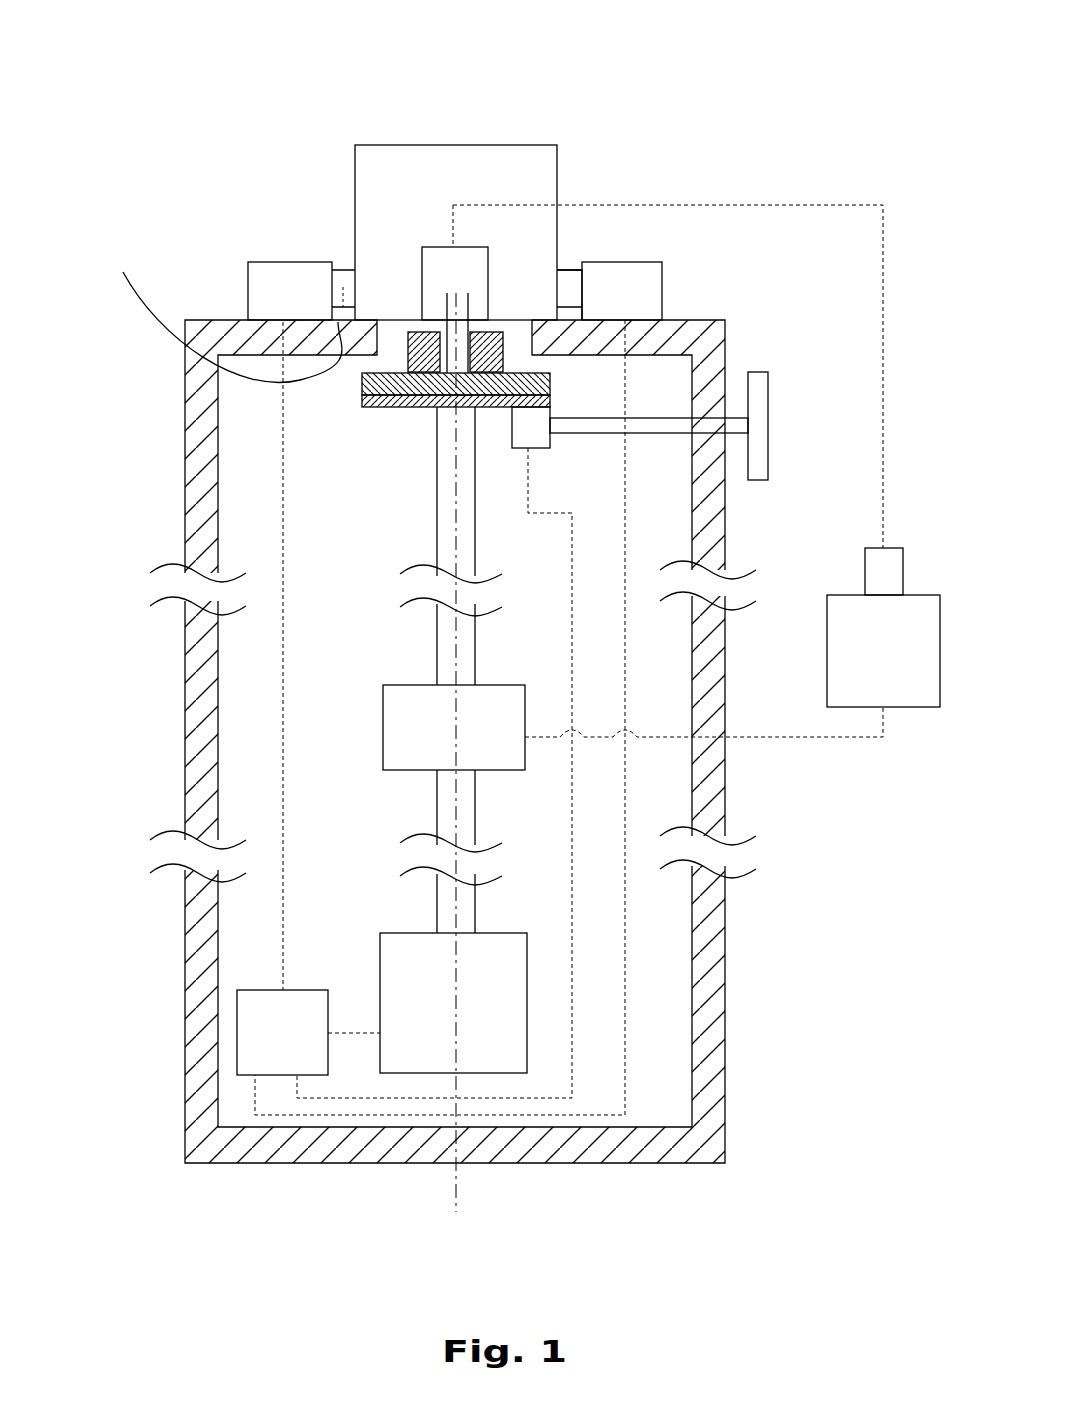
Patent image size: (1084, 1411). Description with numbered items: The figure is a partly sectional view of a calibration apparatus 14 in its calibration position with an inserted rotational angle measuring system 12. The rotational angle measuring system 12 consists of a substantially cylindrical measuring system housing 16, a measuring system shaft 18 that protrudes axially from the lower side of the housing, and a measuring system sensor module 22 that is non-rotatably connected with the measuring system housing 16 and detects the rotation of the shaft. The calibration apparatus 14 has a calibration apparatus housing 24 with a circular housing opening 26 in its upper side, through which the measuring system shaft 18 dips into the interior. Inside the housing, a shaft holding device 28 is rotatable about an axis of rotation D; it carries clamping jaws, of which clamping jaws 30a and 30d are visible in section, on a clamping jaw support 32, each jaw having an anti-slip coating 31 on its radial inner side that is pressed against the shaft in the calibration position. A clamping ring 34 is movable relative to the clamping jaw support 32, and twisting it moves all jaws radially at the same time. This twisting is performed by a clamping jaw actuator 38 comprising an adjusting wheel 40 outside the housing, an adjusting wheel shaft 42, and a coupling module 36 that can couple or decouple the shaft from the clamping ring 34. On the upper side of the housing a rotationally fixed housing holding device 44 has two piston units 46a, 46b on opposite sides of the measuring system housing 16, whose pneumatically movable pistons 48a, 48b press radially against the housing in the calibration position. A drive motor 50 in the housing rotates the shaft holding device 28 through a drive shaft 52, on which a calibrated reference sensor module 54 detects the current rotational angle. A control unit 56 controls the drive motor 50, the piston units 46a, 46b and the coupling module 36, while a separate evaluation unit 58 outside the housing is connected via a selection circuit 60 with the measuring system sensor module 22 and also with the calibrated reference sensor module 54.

The rotational angle measuring system 12 is at (412, 166).
The calibration apparatus 14 is at (400, 741).
The measuring system housing 16 is at (458, 145).
The measuring system shaft 18 is at (577, 380).
The measuring system sensor module 22 is at (437, 267).
The calibration apparatus housing 24 is at (205, 500).
The housing opening 26 is at (570, 287).
The shaft holding device 28 is at (349, 391).
The clamping jaw 30a is at (414, 337).
The clamping jaw 30d is at (512, 332).
The anti-slip coating 31 is at (474, 328).
The clamping jaw support 32 is at (550, 383).
The clamping ring 34 is at (550, 400).
The coupling module 36 is at (528, 428).
The clamping jaw actuator 38 is at (774, 411).
The adjusting wheel 40 is at (755, 450).
The adjusting wheel shaft 42 is at (677, 427).
The housing holding device 44 is at (682, 285).
The piston unit 46a is at (267, 256).
The piston unit 46b is at (646, 257).
The piston 48a is at (219, 614).
The piston 48b is at (642, 262).
The drive motor 50 is at (420, 1038).
The drive shaft 52 is at (447, 912).
The calibrated reference sensor module 54 is at (405, 705).
The control unit 56 is at (257, 1033).
The evaluation unit 58 is at (890, 670).
The selection circuit 60 is at (887, 578).
The axis of rotation D is at (455, 1193).